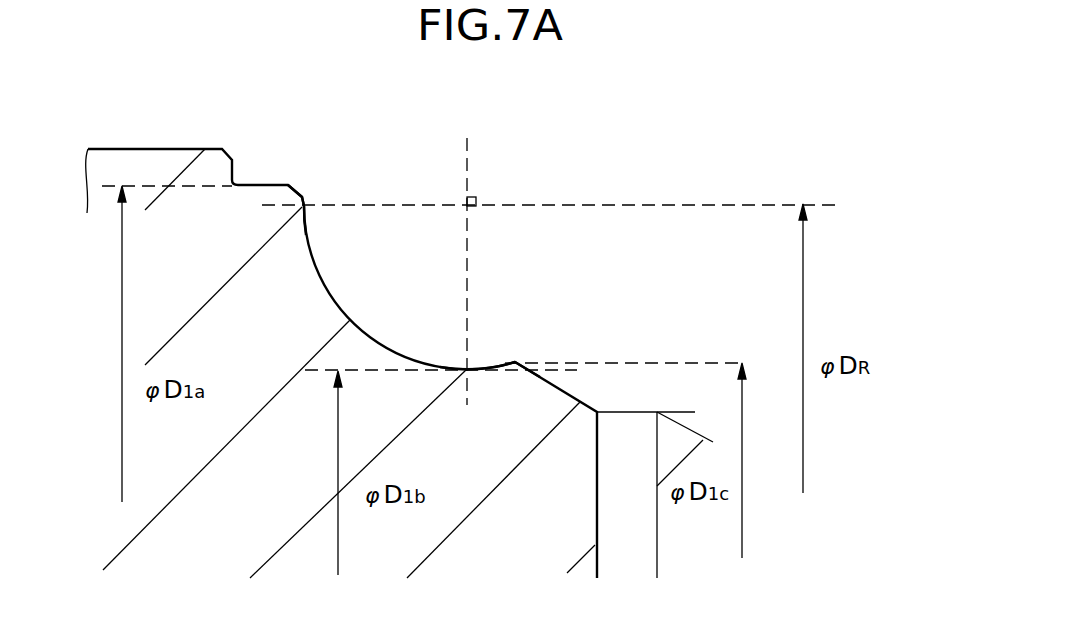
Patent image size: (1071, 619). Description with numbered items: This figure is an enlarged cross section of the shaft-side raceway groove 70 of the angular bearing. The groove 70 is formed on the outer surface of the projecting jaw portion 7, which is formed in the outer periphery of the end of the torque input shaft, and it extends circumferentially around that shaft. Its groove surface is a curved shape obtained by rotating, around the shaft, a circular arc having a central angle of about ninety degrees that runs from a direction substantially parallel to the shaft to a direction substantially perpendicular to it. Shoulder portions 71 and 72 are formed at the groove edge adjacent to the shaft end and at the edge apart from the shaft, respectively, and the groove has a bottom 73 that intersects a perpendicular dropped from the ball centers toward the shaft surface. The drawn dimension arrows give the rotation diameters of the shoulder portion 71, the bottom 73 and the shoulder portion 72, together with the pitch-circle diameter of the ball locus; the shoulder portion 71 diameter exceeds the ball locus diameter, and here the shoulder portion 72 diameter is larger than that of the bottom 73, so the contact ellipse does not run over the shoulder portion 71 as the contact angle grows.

The projecting jaw portion 7 is at (177, 149).
The shaft-side raceway groove 70 is at (348, 322).
The shoulder portion 71 is at (298, 192).
The shoulder portion 72 is at (512, 365).
The bottom 73 is at (467, 367).